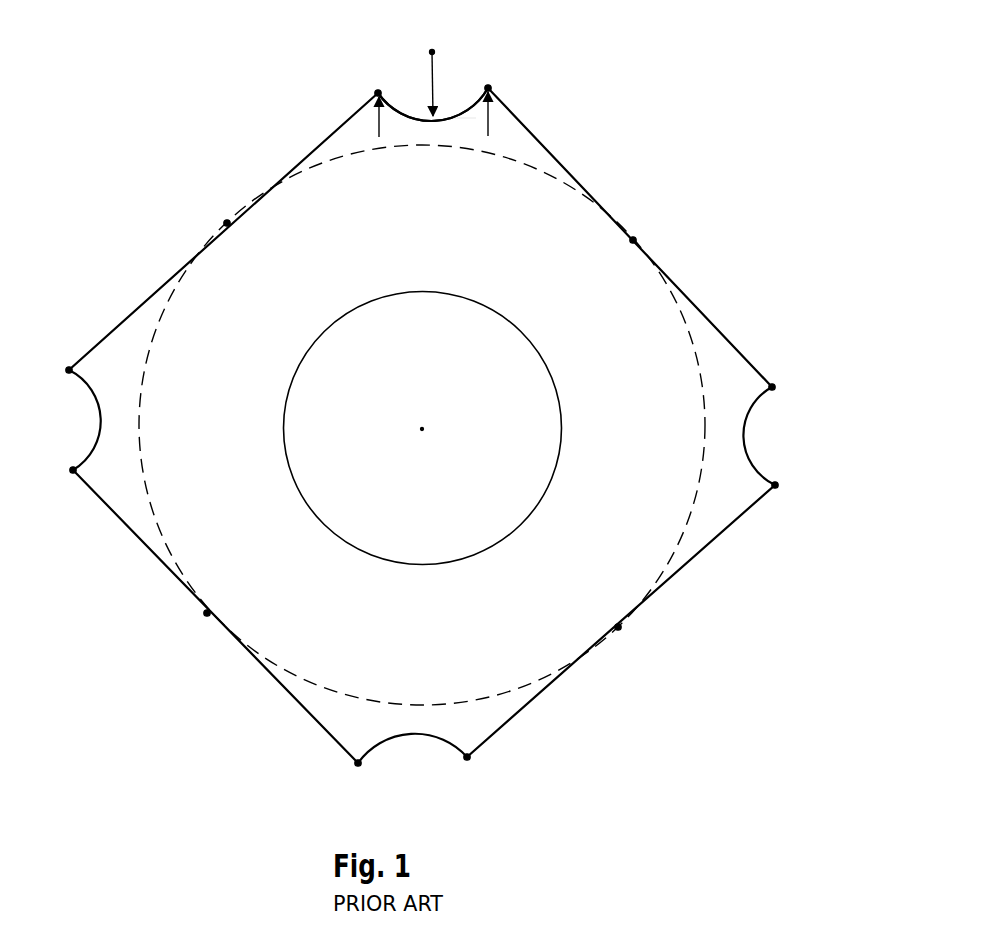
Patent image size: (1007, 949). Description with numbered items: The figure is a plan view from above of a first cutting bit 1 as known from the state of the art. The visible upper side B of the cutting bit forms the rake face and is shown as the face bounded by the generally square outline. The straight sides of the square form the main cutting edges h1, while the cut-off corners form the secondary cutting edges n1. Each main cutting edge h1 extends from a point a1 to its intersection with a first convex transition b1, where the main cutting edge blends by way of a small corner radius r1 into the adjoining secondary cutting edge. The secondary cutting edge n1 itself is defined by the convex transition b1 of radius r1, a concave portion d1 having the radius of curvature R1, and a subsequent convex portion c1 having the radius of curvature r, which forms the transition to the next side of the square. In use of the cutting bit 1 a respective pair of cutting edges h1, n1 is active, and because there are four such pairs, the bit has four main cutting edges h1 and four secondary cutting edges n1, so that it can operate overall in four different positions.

The cutting bit 1 is at (614, 78).
The upper side B is at (215, 397).
The main cutting edge h1 is at (563, 161).
The point a1 is at (227, 223).
The first convex transition b1 is at (488, 88).
The convex portion c1 is at (378, 93).
The secondary cutting edge n1 is at (400, 103).
The radius of curvature R1 is at (432, 72).
The concave portion d1 is at (463, 112).
The radius of curvature r is at (379, 117).
The corner radius r1 is at (488, 118).